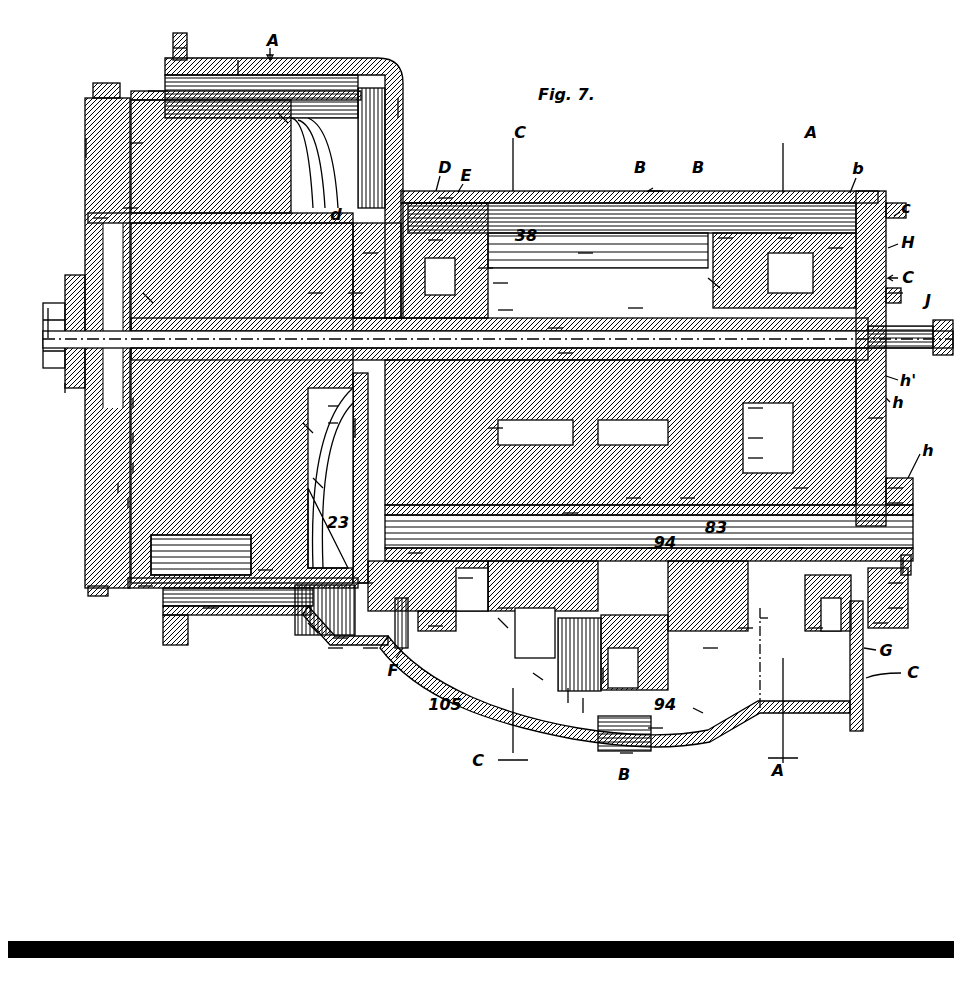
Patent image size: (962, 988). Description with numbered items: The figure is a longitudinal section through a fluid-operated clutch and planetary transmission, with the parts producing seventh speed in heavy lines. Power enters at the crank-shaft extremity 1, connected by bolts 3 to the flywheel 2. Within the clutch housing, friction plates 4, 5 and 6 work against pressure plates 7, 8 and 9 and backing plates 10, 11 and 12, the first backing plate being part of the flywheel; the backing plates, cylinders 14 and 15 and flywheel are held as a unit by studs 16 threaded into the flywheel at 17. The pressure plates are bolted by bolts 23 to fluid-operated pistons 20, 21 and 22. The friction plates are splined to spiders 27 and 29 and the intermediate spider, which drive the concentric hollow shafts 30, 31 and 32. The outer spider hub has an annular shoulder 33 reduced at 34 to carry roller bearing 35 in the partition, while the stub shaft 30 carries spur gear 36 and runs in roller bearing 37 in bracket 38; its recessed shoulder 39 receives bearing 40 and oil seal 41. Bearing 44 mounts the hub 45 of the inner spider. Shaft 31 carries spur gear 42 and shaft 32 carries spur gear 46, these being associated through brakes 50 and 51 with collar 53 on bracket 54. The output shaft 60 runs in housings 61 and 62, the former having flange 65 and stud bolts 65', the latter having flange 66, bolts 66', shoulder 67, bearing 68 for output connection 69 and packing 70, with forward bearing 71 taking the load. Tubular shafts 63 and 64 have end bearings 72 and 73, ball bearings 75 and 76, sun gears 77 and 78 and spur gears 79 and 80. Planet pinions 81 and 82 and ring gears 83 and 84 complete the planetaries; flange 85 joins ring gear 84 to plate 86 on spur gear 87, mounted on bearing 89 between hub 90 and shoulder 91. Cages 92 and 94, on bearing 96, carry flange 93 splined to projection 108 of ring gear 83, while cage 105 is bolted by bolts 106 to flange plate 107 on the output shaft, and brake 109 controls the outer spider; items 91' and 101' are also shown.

The crank-shaft extremity 1 is at (45, 315).
The flywheel 2 is at (78, 142).
The bolts 3 is at (57, 385).
The friction plate 4 is at (125, 140).
The friction plate 5 is at (152, 84).
The friction plate 6 is at (236, 60).
The pressure plate 7 is at (125, 495).
The pressure plate 8 is at (136, 580).
The pressure plate 9 is at (200, 572).
The backing plate 10 is at (115, 478).
The backing plate 11 is at (200, 602).
The backing plate 12 is at (258, 565).
The cylinder 14 is at (125, 430).
The cylinder 15 is at (300, 420).
The studs 16 is at (122, 200).
The threaded connection 17 is at (90, 222).
The piston 20 is at (140, 290).
The piston 21 is at (125, 395).
The piston 22 is at (310, 475).
The bolts 23 is at (125, 462).
The spider 27 is at (182, 55).
The spider 29 is at (394, 100).
The hollow stub shaft 30 is at (497, 300).
The intermediate hollow shaft 31 is at (545, 318).
The inner hollow shaft 32 is at (555, 345).
The annular shoulder 33 is at (352, 420).
The reduced hub portion 34 is at (478, 258).
The roller bearing assembly 35 is at (425, 234).
The spur gear 36 is at (440, 190).
The roller bearing 37 is at (493, 275).
The bracket 38 is at (275, 112).
The shoulder 39 is at (358, 248).
The bearing assembly 40 is at (345, 283).
The oil seal 41 is at (330, 399).
The spur gear 42 is at (715, 228).
The bearing assembly 44 is at (330, 416).
The hub 45 is at (308, 283).
The spur gear 46 is at (825, 238).
The brake 50 is at (705, 280).
The brake 51 is at (884, 286).
The collar 53 is at (750, 403).
The bracket 54 is at (778, 228).
The output shaft 60 is at (490, 538).
The bearing housing 61 is at (330, 635).
The bearing housing 62 is at (875, 412).
The tubular shaft 63 is at (462, 575).
The tubular shaft 64 is at (790, 480).
The annular flange 65 is at (361, 669).
The stud bolts 65' is at (320, 669).
The flange 66 is at (898, 633).
The bolts 66' is at (912, 613).
The inner annular shoulder 67 is at (898, 578).
The bearing assembly 68 is at (903, 558).
The output connection 69 is at (895, 478).
The packing structure 70 is at (897, 494).
The forward bearing 71 is at (355, 580).
The end bearing 72 is at (408, 545).
The end bearing 73 is at (785, 538).
The ball bearing assembly 75 is at (536, 538).
The ball bearing assembly 76 is at (648, 540).
The sun gear 77 is at (497, 602).
The sun gear 78 is at (703, 645).
The spur gear 79 is at (430, 622).
The spur gear 80 is at (808, 622).
The planet pinion assembly 81 is at (488, 422).
The planet pinion assembly 82 is at (750, 430).
The ring gear 83 is at (530, 670).
The ring gear 84 is at (647, 722).
The annular flange 85 is at (692, 705).
The annular plate 86 is at (738, 622).
The spur gear 87 is at (750, 450).
The bearing 89 is at (745, 538).
The hub 90 is at (770, 585).
The shoulder 91 is at (680, 513).
The gear 91' is at (629, 511).
The cage 92 is at (600, 676).
The annular flange 93 is at (572, 705).
The cage 94 is at (625, 345).
The bearing 96 is at (615, 540).
The gear 101' is at (573, 529).
The cage 105 is at (577, 300).
The bolts 106 is at (495, 615).
The flange plate 107 is at (560, 695).
The projecting structure 108 is at (612, 745).
The brake 109 is at (305, 620).